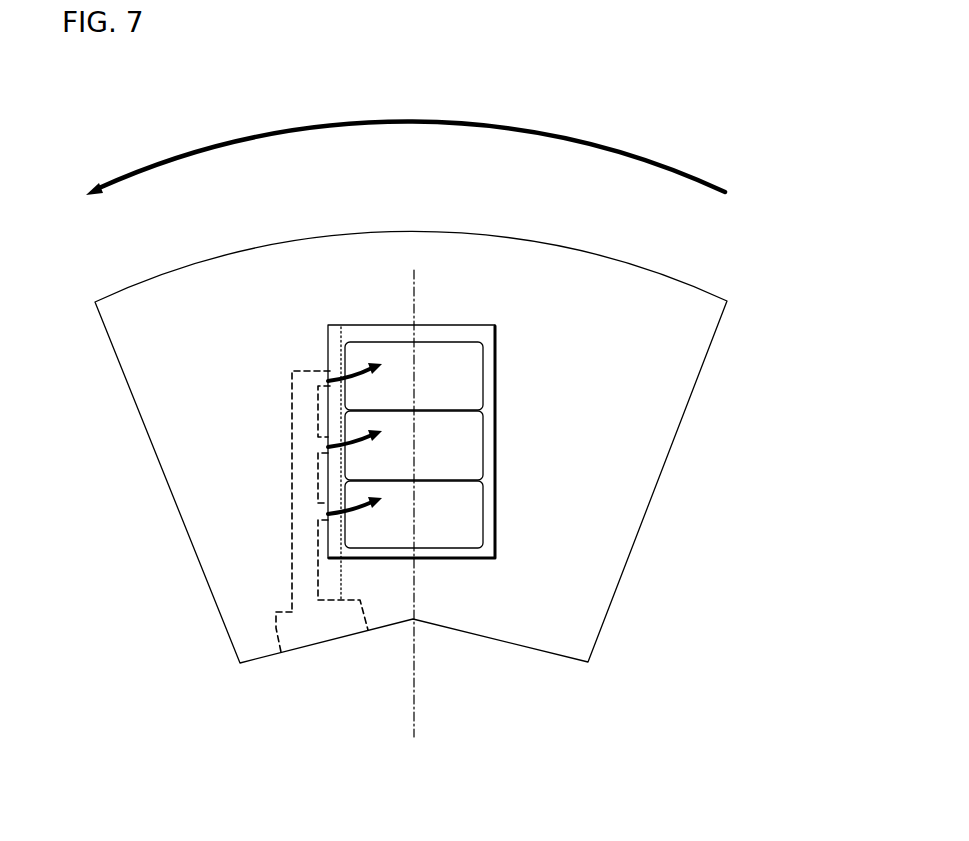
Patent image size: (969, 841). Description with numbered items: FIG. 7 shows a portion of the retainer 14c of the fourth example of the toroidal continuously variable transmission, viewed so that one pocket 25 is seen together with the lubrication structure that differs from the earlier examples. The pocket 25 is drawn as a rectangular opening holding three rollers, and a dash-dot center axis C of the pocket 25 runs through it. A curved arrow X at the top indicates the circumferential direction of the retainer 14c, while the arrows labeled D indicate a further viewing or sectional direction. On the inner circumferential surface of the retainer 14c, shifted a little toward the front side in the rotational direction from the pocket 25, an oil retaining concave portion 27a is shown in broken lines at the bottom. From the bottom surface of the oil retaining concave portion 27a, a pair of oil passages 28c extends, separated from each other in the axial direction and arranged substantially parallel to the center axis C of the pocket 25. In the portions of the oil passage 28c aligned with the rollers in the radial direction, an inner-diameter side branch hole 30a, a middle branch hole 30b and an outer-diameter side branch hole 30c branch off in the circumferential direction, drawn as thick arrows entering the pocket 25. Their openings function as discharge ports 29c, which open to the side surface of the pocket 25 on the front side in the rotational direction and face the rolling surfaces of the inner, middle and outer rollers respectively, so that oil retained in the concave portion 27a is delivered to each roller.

The retainer 14c is at (712, 355).
The pocket 25 is at (494, 533).
The oil retaining concave portion 27a is at (290, 650).
The oil passage 28c is at (327, 470).
The discharge port 29c is at (339, 327).
The inner-diameter side branch hole 30a is at (327, 516).
The middle branch hole 30b is at (322, 441).
The outer-diameter side branch hole 30c is at (326, 380).
The circumferential direction X is at (657, 165).
The center axis C is at (415, 288).
The direction D is at (127, 481).